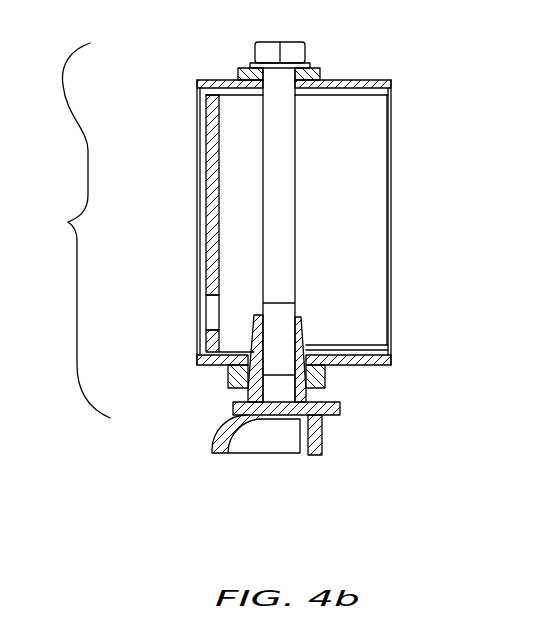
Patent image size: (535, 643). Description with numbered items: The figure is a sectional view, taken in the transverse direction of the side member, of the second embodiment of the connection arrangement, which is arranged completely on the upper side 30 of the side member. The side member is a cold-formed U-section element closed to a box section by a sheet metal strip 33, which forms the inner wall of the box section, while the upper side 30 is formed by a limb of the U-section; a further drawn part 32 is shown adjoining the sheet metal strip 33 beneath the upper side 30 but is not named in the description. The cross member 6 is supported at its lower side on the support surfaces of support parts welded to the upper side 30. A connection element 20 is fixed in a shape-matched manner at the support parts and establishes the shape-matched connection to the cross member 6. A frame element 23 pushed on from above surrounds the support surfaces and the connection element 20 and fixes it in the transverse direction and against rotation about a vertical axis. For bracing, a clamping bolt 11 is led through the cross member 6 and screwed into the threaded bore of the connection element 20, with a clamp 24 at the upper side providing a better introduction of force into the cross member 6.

The cross member 6 is at (391, 154).
The bolt 11 is at (274, 150).
The connection element 20 is at (303, 326).
The frame element 23 is at (325, 378).
The clamp 24 is at (320, 72).
The upper side 30 is at (228, 400).
The hook 32 is at (255, 442).
The sheet metal strip 33 is at (322, 440).